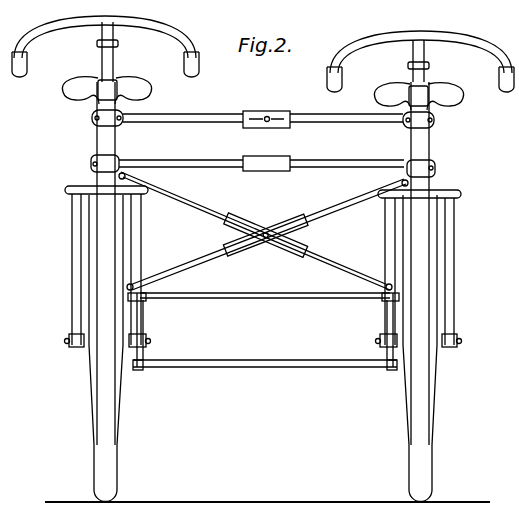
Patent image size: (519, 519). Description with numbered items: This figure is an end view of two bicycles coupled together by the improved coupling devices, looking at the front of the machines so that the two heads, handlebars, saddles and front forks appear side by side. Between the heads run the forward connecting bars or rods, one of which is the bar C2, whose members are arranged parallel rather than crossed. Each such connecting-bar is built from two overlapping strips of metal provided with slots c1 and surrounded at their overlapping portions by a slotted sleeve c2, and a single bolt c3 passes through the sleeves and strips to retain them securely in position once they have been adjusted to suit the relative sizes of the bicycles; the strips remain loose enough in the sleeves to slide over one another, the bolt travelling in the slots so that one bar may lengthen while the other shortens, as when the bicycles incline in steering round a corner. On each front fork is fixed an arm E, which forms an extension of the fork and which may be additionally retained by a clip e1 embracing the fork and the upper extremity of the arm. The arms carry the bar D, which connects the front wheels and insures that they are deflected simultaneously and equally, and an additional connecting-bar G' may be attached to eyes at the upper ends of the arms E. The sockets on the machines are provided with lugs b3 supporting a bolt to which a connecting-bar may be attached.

The lugs b3 is at (460, 117).
The connecting-bar C2 is at (313, 122).
The bolt c3 is at (268, 111).
The slotted sleeve c2 is at (261, 153).
The slots c1 is at (325, 170).
The clip e1 is at (150, 296).
The additional connecting-bar G' is at (265, 314).
The arm E is at (143, 322).
The bar D is at (247, 367).